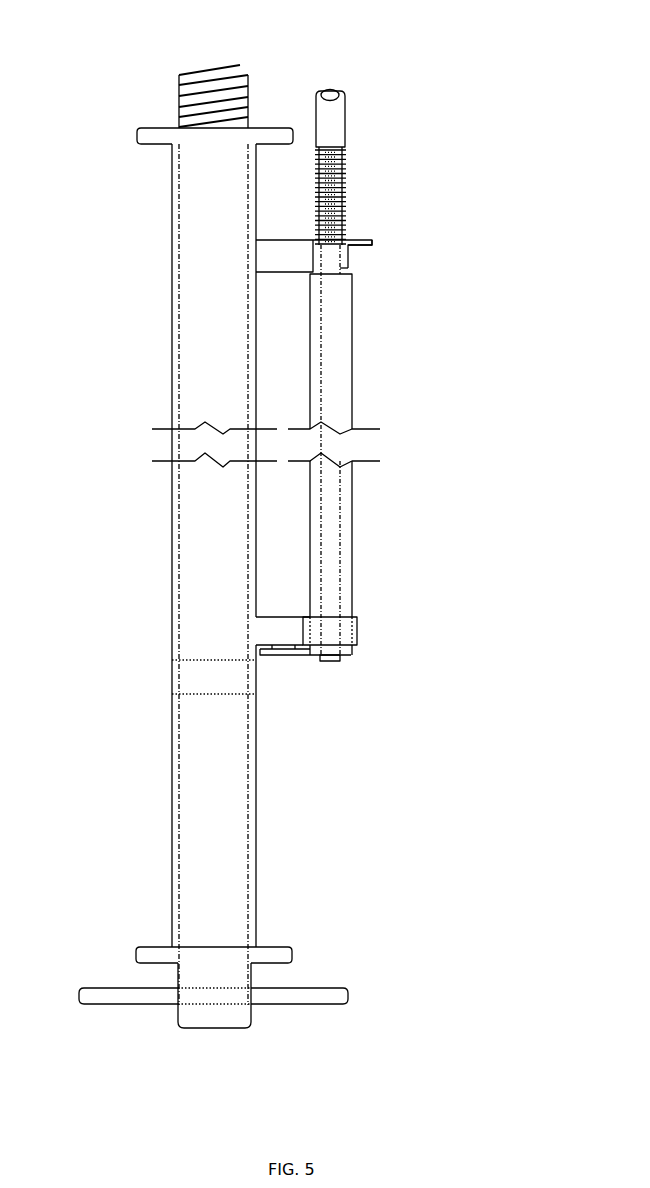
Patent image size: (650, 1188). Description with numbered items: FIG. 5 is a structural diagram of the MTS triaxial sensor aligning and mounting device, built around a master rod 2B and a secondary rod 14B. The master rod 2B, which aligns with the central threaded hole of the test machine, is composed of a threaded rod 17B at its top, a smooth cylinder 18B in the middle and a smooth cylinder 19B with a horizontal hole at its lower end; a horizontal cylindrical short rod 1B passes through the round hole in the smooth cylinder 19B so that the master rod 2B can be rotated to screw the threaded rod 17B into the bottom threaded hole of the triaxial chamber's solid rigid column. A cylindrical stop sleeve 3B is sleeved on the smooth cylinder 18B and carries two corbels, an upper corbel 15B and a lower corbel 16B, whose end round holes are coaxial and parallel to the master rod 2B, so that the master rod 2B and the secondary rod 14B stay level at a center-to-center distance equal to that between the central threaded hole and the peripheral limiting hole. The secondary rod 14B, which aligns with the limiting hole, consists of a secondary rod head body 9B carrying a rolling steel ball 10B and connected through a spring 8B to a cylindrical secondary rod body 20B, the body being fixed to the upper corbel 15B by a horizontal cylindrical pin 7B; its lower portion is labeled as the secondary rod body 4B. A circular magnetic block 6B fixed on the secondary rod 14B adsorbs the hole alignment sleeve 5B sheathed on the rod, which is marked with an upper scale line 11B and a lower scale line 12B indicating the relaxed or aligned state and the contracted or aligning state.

The horizontal cylindrical short rod 1B is at (295, 997).
The master rod 2B is at (212, 955).
The stop sleeve 3B is at (250, 567).
The secondary rod body 4B is at (330, 657).
The hole alignment sleeve 5B is at (313, 568).
The circular magnetic block 6B is at (282, 649).
The horizontal cylindrical pin 7B is at (372, 243).
The spring 8B is at (333, 190).
The secondary rod head body 9B is at (332, 123).
The rolling steel ball 10B is at (335, 95).
The upper scale line 11B is at (172, 660).
The lower scale line 12B is at (172, 694).
The secondary rod 14B is at (335, 215).
The upper corbel 15B is at (343, 266).
The lower corbel 16B is at (357, 630).
The threaded rod 17B is at (248, 79).
The smooth cylinder 18B is at (187, 809).
The smooth cylinder with a horizontal hole 19B is at (188, 1019).
The secondary rod body 20B is at (352, 415).